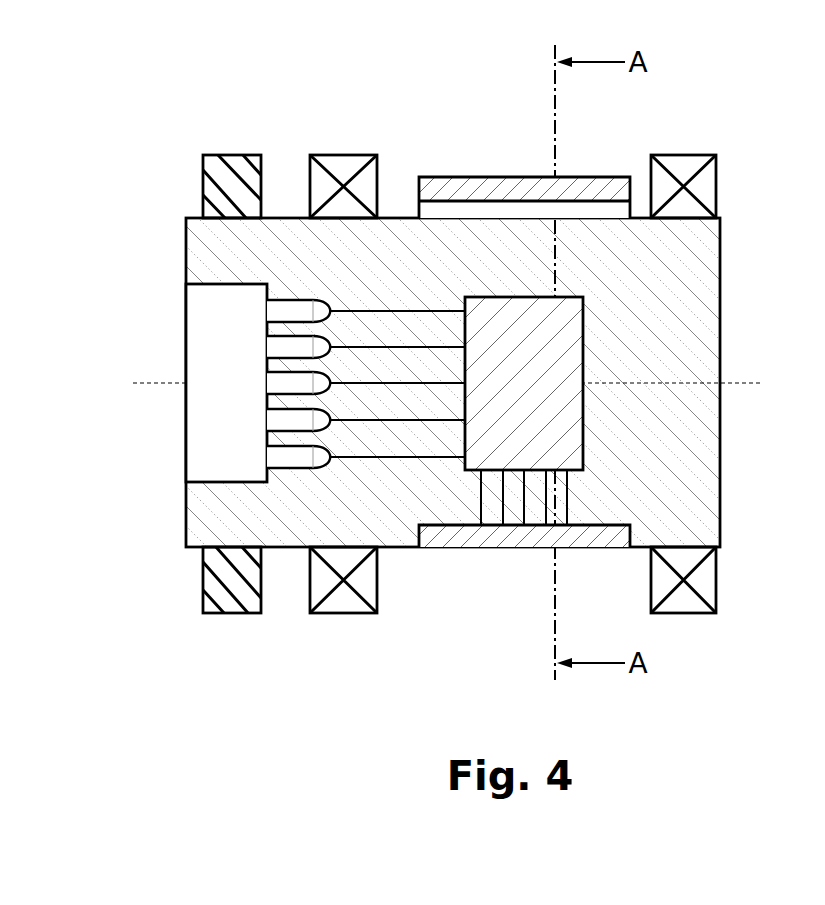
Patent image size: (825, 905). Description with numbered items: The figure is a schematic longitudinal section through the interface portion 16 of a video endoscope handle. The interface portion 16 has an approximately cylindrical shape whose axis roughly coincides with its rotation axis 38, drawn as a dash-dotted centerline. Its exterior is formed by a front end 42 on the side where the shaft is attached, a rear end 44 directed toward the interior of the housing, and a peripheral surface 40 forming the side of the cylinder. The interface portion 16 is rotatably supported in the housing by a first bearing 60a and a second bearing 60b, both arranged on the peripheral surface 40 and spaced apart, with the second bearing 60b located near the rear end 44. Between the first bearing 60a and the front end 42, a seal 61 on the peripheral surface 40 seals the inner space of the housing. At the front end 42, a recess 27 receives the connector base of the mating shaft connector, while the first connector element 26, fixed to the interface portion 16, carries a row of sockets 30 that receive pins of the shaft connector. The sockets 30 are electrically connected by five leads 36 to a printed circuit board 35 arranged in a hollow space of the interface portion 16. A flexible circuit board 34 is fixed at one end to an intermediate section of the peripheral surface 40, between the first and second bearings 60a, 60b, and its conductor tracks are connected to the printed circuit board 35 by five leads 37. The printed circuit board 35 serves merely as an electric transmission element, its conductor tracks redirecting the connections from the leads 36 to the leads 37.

The interface portion 16 is at (397, 238).
The first connector element 26 is at (252, 364).
The recess 27 is at (218, 482).
The sockets 30 is at (287, 458).
The flexible circuit board 34 is at (500, 178).
The printed circuit board 35 is at (567, 342).
The leads 36 is at (443, 460).
The leads 37 is at (567, 497).
The rotation axis 38 is at (155, 383).
The peripheral surface 40 is at (399, 548).
The front end 42 is at (170, 465).
The rear end 44 is at (740, 440).
The first bearing 60a is at (345, 155).
The second bearing 60b is at (683, 155).
The seal 61 is at (235, 155).